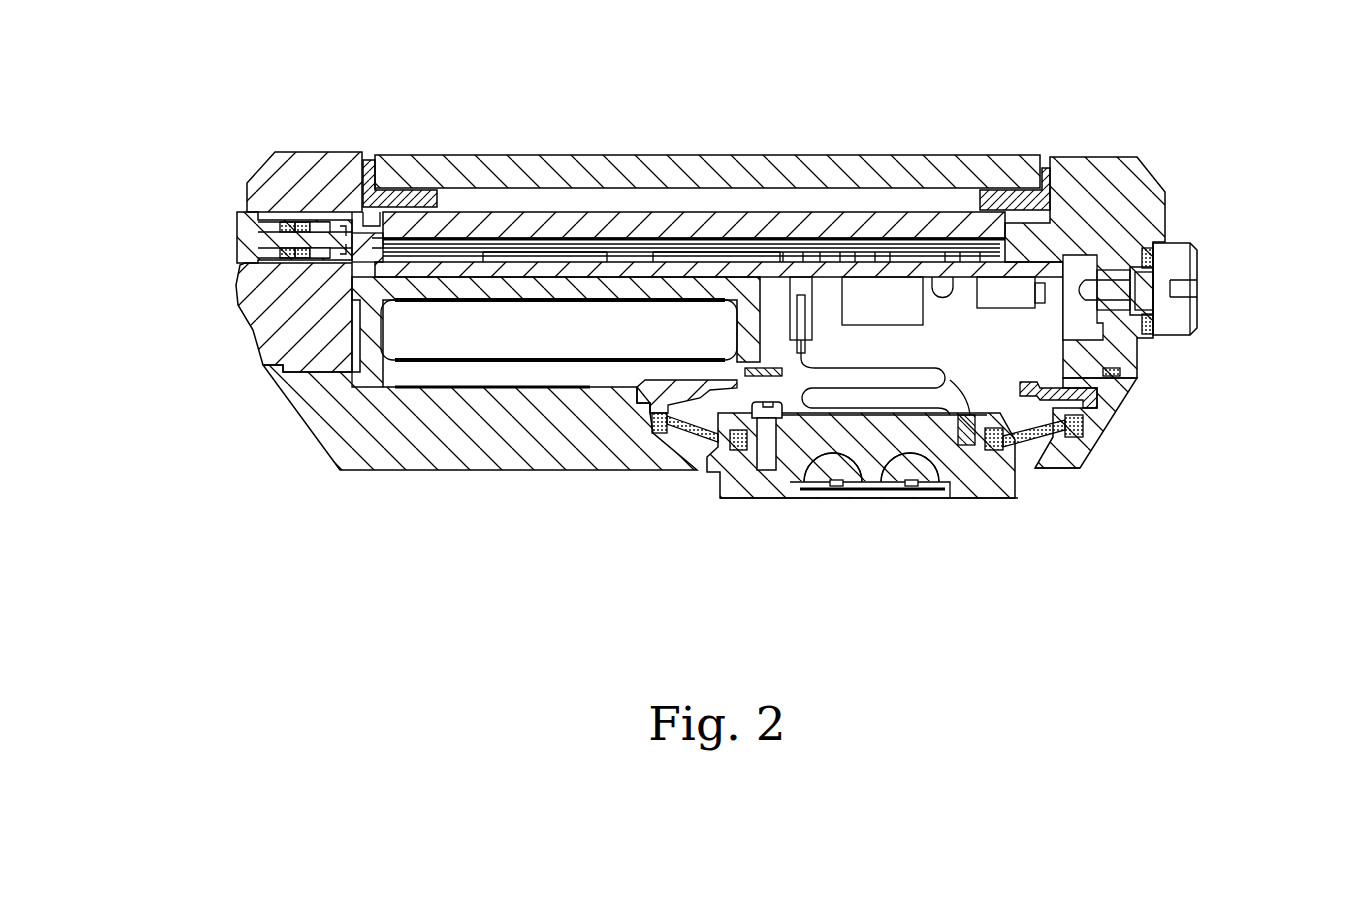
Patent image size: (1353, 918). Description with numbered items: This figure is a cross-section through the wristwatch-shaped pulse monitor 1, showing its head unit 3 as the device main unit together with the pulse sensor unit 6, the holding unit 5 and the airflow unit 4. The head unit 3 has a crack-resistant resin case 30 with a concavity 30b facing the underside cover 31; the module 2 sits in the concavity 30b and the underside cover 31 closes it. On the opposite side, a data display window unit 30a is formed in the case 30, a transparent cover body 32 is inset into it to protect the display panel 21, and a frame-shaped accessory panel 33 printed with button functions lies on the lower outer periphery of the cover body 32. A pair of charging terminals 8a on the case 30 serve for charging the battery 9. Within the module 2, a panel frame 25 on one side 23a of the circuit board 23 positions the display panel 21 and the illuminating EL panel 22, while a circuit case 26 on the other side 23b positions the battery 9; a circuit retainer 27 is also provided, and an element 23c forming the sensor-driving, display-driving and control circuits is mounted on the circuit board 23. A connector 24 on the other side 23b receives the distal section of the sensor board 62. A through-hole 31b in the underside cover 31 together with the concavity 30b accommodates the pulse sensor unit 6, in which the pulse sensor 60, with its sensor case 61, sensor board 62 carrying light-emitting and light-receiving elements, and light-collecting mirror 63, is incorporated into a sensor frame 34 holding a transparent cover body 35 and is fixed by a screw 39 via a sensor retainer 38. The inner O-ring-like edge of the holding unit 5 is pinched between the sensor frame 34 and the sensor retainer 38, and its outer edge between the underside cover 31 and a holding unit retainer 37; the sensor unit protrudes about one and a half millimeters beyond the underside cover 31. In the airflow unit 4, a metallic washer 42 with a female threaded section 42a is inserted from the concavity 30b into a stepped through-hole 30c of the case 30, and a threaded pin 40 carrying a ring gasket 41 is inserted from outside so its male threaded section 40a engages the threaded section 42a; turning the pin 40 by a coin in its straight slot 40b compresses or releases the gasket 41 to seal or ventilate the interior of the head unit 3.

The pulse monitor 1 is at (775, 66).
The module 2 is at (600, 208).
The head unit 3 is at (230, 152).
The airflow unit 4 is at (1179, 250).
The holding unit 5 is at (1030, 438).
The pulse sensor unit 6 is at (869, 510).
The charging terminals 8a is at (244, 247).
The battery 9 is at (528, 345).
The display panel 21 is at (646, 228).
The illuminating EL panel 22 is at (850, 232).
The circuit board 23 is at (704, 187).
The one side of the circuit board 23a is at (472, 263).
The other side of the circuit board 23b is at (945, 285).
The element 23c is at (915, 250).
The connector 24 is at (800, 285).
The panel frame 25 is at (1033, 300).
The circuit case 26 is at (697, 283).
The circuit retainer 27 is at (768, 360).
The case 30 is at (1158, 212).
The data display window unit 30a is at (548, 152).
The concavity 30b is at (1110, 380).
The stepped through-hole 30c is at (1078, 272).
The underside cover 31 is at (434, 468).
The through-hole 31b is at (663, 458).
The cover body 32 is at (368, 184).
The accessory panel 33 is at (410, 205).
The sensor frame 34 is at (730, 490).
The cover body 35 is at (826, 499).
The holding unit retainer 37 is at (1090, 400).
The sensor retainer 38 is at (697, 450).
The screw 39 is at (767, 443).
The threaded pin 40 is at (1180, 310).
The threaded section 40a is at (1150, 245).
The straight slot 40b is at (1190, 289).
The gasket 41 is at (1150, 322).
The washer 42 is at (1100, 302).
The threaded section 42a is at (1120, 322).
The pulse sensor 60 is at (849, 466).
The sensor case 61 is at (905, 488).
The sensor board 62 is at (965, 432).
The light-collecting mirror 63 is at (807, 497).